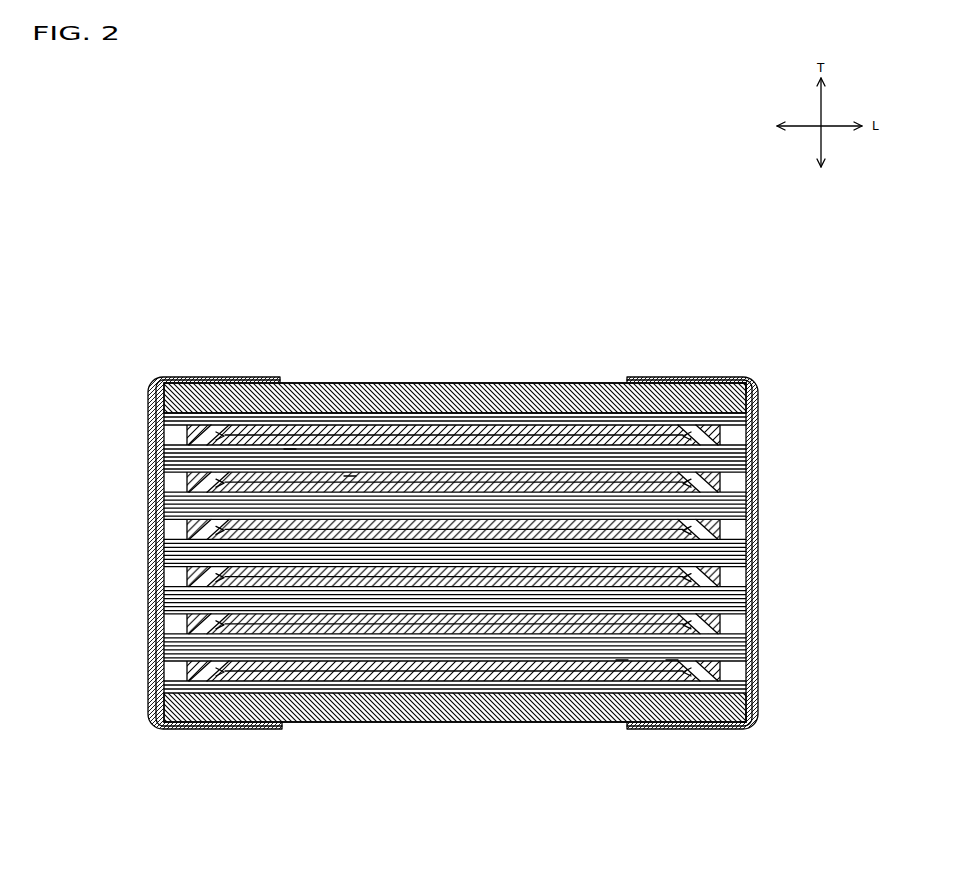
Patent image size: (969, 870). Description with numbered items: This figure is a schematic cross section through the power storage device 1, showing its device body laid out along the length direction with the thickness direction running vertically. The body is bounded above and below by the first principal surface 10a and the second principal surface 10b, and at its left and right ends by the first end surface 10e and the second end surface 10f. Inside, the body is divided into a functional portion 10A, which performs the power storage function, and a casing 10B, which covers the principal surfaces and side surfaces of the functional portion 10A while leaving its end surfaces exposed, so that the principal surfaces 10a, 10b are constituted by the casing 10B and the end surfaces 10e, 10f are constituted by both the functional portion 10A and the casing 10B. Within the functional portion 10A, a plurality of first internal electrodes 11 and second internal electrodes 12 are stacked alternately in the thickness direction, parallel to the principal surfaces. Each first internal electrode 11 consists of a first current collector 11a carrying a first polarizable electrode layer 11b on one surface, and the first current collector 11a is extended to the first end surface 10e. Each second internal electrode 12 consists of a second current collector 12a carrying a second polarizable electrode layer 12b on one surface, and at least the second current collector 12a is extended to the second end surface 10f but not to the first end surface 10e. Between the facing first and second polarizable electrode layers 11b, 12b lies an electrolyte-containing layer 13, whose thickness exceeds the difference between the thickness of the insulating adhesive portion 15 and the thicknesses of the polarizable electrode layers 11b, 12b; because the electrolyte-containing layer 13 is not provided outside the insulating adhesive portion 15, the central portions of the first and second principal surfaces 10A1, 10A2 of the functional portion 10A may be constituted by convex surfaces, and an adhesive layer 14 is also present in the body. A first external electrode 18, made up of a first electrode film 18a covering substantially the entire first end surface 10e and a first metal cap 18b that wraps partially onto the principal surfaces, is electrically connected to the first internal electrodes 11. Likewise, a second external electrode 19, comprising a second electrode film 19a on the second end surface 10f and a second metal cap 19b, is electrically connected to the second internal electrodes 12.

The power storage device 1 is at (703, 286).
The first principal surface 10a is at (425, 383).
The second principal surface 10b is at (503, 723).
The first end surface 10e is at (158, 567).
The second end surface 10f is at (757, 571).
The functional portion 10A is at (455, 548).
The first principal surface of functional portion 10A1 is at (555, 408).
The second principal surface of functional portion 10A2 is at (478, 695).
The casing 10B is at (455, 544).
The first internal electrode 11 is at (350, 307).
The first current collector 11a is at (290, 455).
The first polarizable electrode layer 11b is at (350, 478).
The second internal electrode 12 is at (668, 783).
The second current collector 12a is at (622, 662).
The second polarizable electrode layer 12b is at (672, 662).
The electrolyte-containing layer 13 is at (615, 445).
The adhesive layer 14 is at (757, 643).
The insulating adhesive portion 15 is at (759, 402).
The first external electrode 18 is at (165, 553).
The first electrode film 18a is at (150, 465).
The first metal cap 18b is at (152, 510).
The second external electrode 19 is at (741, 553).
The second electrode film 19a is at (758, 442).
The second metal cap 19b is at (760, 474).